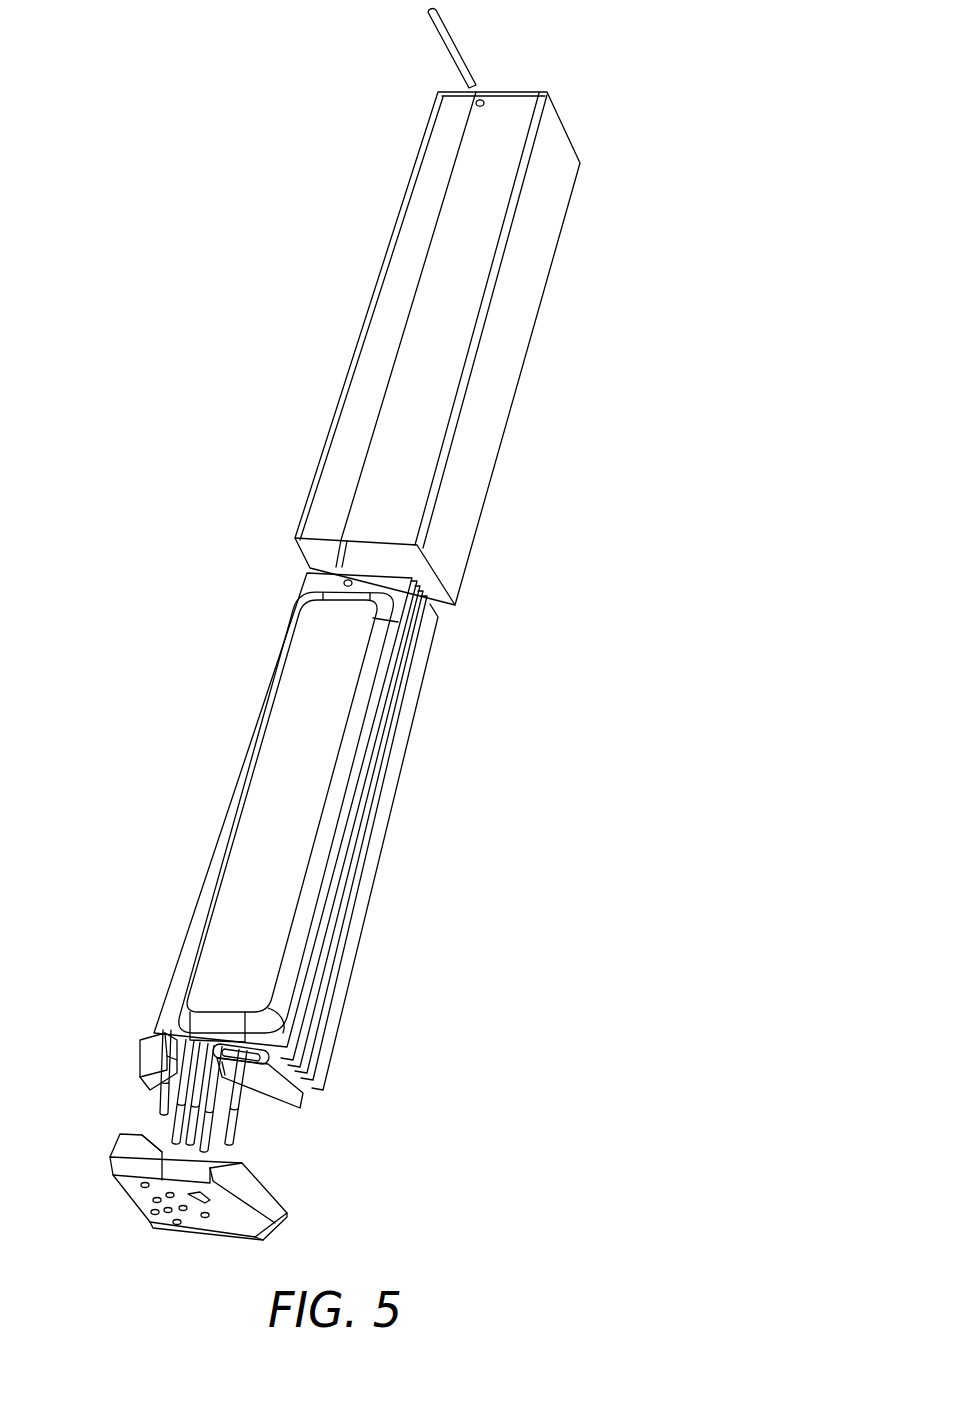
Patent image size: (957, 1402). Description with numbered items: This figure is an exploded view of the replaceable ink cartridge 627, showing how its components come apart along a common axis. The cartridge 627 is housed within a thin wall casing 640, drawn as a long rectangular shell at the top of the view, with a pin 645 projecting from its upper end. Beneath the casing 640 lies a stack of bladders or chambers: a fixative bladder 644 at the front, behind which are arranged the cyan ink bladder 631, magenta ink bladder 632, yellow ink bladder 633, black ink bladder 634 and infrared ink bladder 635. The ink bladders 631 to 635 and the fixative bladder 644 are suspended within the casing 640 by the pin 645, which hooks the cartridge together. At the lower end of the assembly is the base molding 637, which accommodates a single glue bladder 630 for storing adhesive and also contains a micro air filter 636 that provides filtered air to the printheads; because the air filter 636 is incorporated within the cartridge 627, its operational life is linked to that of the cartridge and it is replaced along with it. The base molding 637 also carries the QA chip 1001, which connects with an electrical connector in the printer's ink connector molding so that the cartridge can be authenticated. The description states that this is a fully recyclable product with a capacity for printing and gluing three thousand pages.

The ink cartridge 627 is at (214, 422).
The thin wall casing 640 is at (495, 388).
The pin 645 is at (472, 78).
The fixative bladder 644 is at (357, 638).
The infrared ink bladder 635 is at (398, 730).
The black ink bladder 634 is at (378, 773).
The yellow ink bladder 633 is at (360, 828).
The magenta ink bladder 632 is at (335, 862).
The cyan ink bladder 631 is at (312, 943).
The micro air filter 636 is at (153, 1062).
The glue bladder 630 is at (300, 1100).
The QA chip 1001 is at (223, 1197).
The base molding 637 is at (277, 1215).